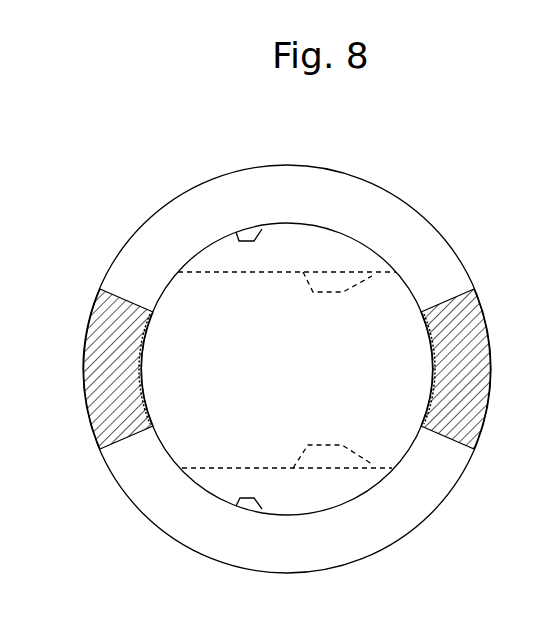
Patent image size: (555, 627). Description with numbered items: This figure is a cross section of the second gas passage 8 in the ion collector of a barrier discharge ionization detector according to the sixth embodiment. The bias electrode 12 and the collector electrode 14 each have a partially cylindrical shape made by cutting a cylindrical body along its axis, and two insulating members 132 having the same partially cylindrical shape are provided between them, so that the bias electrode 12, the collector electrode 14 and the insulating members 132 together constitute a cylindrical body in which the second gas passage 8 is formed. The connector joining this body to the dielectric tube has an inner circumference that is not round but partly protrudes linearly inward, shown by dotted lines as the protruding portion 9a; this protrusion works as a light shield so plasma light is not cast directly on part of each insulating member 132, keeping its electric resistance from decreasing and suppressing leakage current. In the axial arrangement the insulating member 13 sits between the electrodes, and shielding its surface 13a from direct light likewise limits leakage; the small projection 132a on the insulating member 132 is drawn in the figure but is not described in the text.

The second gas passage 8 is at (198, 326).
The linearly protruding portion of connector inner circumference 9a is at (372, 276).
The bias electrode 12 is at (82, 346).
The insulating member 13 is at (347, 568).
The surface of insulating member 13a is at (233, 507).
The collector electrode 14 is at (492, 352).
The insulating member 132 is at (352, 177).
The inner wall projection 132a is at (236, 232).